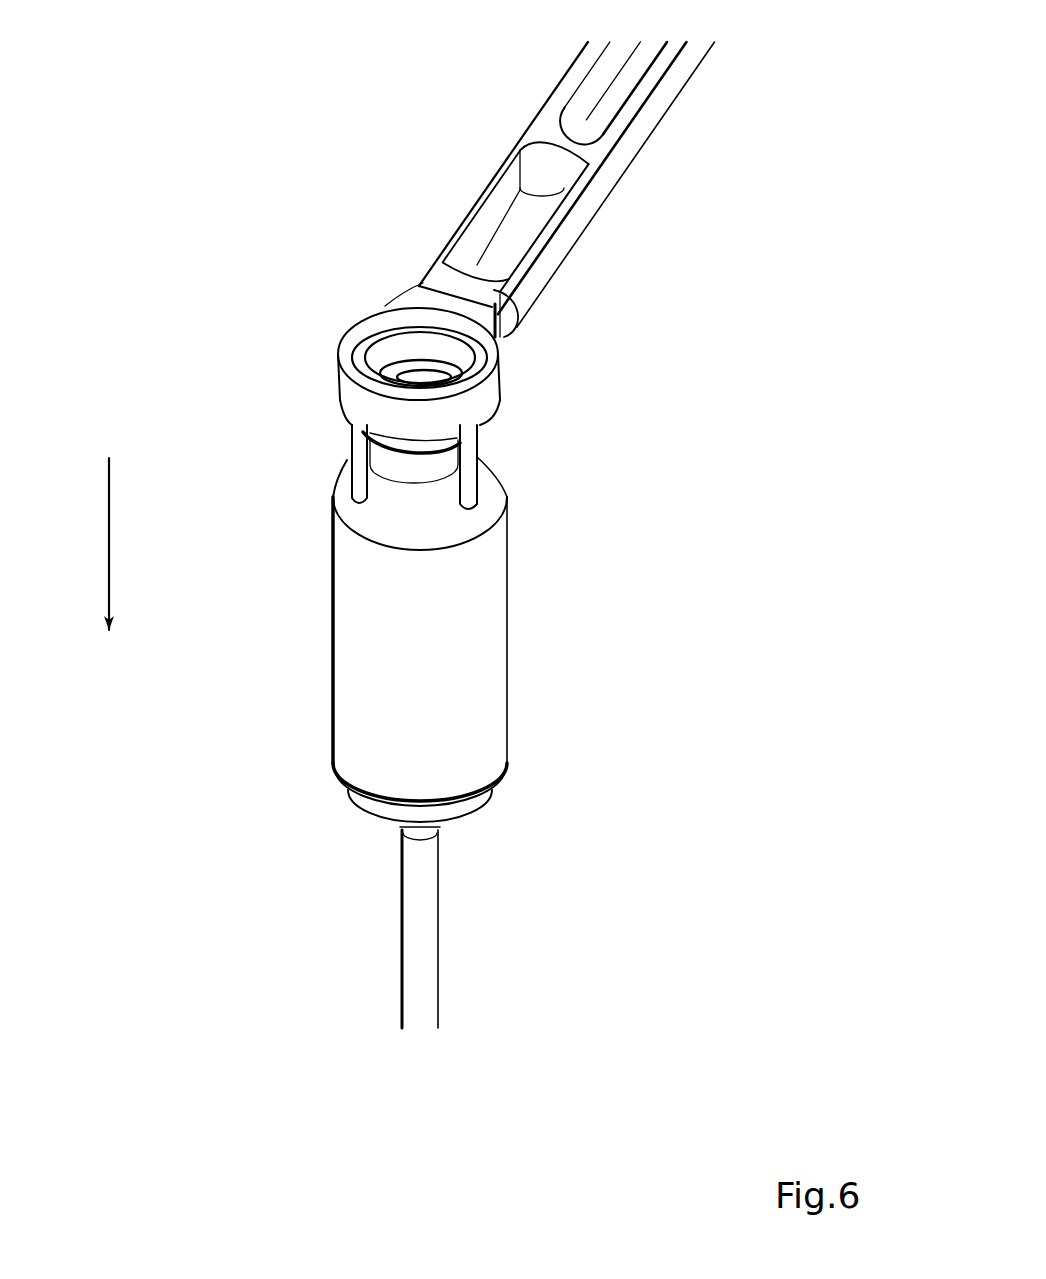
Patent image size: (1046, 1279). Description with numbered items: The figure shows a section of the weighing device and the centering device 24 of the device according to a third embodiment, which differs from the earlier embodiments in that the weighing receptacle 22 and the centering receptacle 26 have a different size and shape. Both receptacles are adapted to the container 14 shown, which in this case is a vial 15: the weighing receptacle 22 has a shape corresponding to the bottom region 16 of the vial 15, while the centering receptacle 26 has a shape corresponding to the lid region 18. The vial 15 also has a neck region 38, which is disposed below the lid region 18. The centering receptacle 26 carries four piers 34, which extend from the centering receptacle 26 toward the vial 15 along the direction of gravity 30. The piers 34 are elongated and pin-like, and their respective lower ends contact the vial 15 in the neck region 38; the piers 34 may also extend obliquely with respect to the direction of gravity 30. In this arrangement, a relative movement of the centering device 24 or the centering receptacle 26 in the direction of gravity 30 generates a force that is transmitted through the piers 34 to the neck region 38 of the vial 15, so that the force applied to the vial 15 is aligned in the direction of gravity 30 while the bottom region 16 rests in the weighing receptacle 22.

The centering device 24 is at (748, 124).
The lid region 18 is at (290, 398).
The centering receptacle 26 is at (473, 398).
The piers 34 is at (470, 483).
The neck region 38 is at (322, 482).
The vial 15 is at (367, 573).
The container 14 is at (380, 612).
The bottom region 16 is at (550, 748).
The weighing receptacle 22 is at (420, 954).
The direction of gravity 30 is at (109, 568).